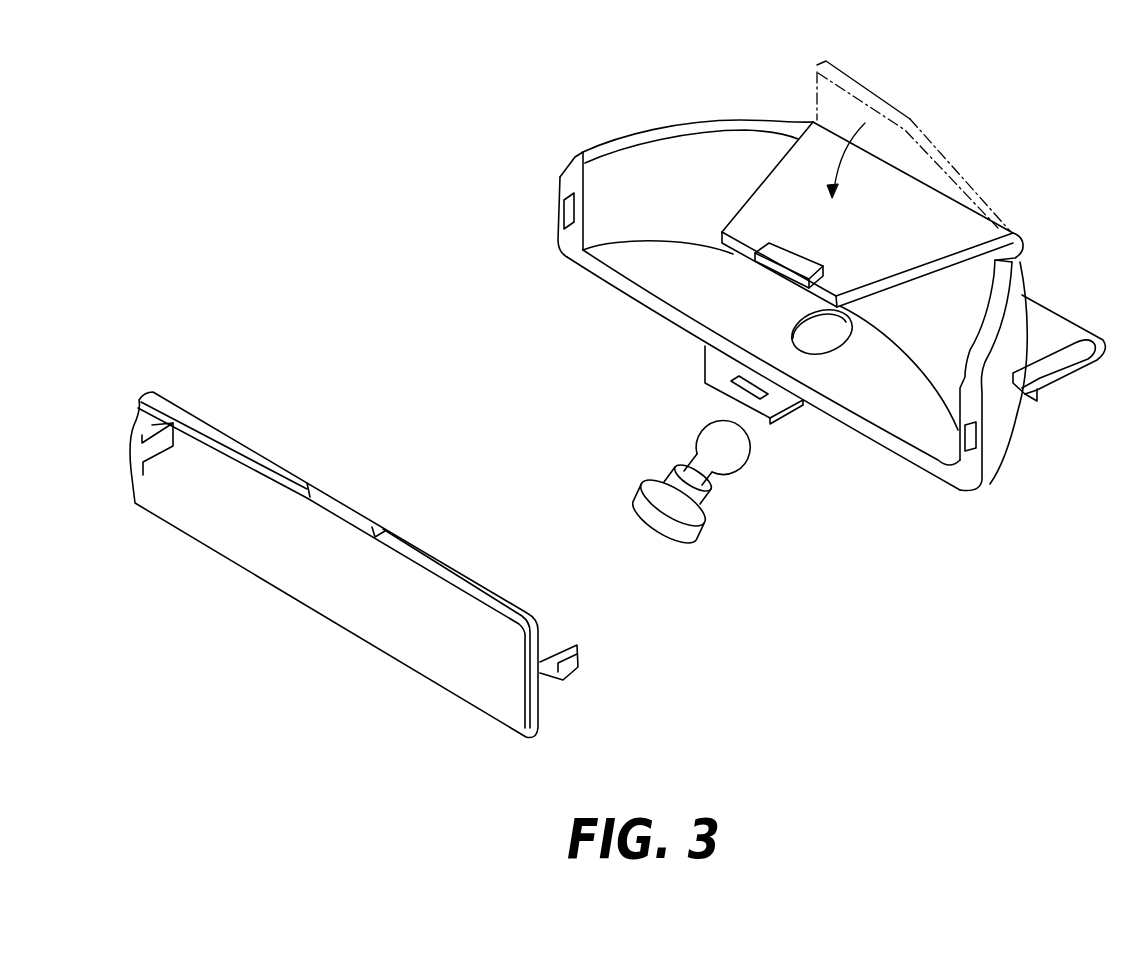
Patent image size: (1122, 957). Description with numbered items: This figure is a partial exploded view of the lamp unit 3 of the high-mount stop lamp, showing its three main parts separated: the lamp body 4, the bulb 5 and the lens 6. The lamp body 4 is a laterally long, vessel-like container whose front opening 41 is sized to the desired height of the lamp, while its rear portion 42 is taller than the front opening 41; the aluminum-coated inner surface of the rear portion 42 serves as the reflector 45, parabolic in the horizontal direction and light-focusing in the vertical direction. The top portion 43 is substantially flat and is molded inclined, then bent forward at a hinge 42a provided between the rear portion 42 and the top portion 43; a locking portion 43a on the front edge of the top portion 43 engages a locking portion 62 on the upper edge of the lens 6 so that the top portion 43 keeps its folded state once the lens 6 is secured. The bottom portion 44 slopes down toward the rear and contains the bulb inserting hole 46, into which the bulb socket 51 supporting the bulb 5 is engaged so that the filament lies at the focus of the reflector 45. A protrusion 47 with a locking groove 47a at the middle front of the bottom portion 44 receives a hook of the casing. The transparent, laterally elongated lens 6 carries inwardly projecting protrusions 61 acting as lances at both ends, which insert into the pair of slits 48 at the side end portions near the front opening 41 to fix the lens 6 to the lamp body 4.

The lamp unit 3 is at (470, 110).
The lamp body 4 is at (930, 450).
The bulb 5 is at (737, 475).
The lens 6 is at (442, 560).
The front opening 41 is at (640, 274).
The rear portion 42 is at (988, 293).
The hinge 42a is at (1015, 236).
The top portion 43 is at (795, 163).
The locking portion 43a is at (803, 262).
The bottom portion 44 is at (850, 400).
The reflector 45 is at (693, 143).
The bulb inserting hole 46 is at (810, 337).
The protrusion 47 is at (705, 357).
The locking groove 47a is at (740, 384).
The slits 48 is at (565, 208).
The bulb socket 51 is at (687, 530).
The protrusions 61 is at (170, 430).
The locking portion 62 is at (342, 493).